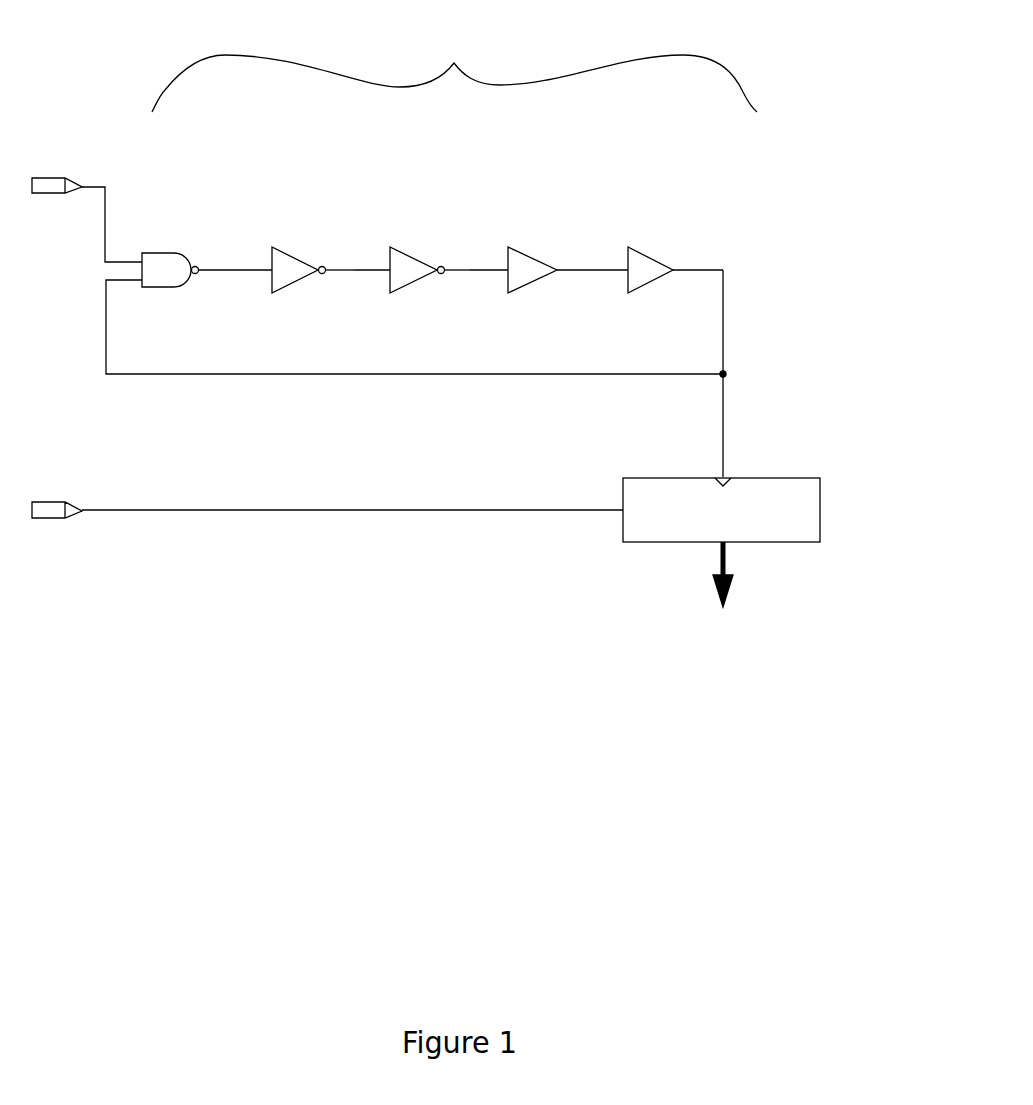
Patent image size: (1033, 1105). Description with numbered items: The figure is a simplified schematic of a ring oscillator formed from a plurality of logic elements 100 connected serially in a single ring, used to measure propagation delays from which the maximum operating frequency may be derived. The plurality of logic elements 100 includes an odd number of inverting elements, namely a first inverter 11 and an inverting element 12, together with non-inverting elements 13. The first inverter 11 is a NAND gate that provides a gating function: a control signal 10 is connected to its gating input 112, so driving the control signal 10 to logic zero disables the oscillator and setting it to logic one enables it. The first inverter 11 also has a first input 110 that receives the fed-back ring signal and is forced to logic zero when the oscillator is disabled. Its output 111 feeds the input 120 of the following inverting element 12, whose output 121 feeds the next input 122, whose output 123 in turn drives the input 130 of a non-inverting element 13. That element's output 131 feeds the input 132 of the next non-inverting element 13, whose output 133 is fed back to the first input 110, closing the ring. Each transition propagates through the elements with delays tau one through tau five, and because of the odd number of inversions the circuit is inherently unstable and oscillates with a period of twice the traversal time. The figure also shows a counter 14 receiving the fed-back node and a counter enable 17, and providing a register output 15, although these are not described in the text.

The plurality of logic elements 100 is at (454, 73).
The control signal 10 is at (50, 187).
The first inverter 11 is at (155, 258).
The gating input 112 is at (122, 260).
The first input 110 is at (128, 280).
The output 111 is at (203, 272).
The input 120 is at (260, 268).
The inverting element 12 is at (412, 270).
The output 121 is at (333, 273).
The input 122 is at (375, 268).
The output 123 is at (452, 273).
The input 130 is at (490, 268).
The non-inverting element 13 is at (647, 268).
The output 131 is at (568, 272).
The input 132 is at (608, 268).
The output 133 is at (682, 272).
The counter 14 is at (692, 525).
The register output 15 is at (732, 587).
The counter enable input 17 is at (50, 513).